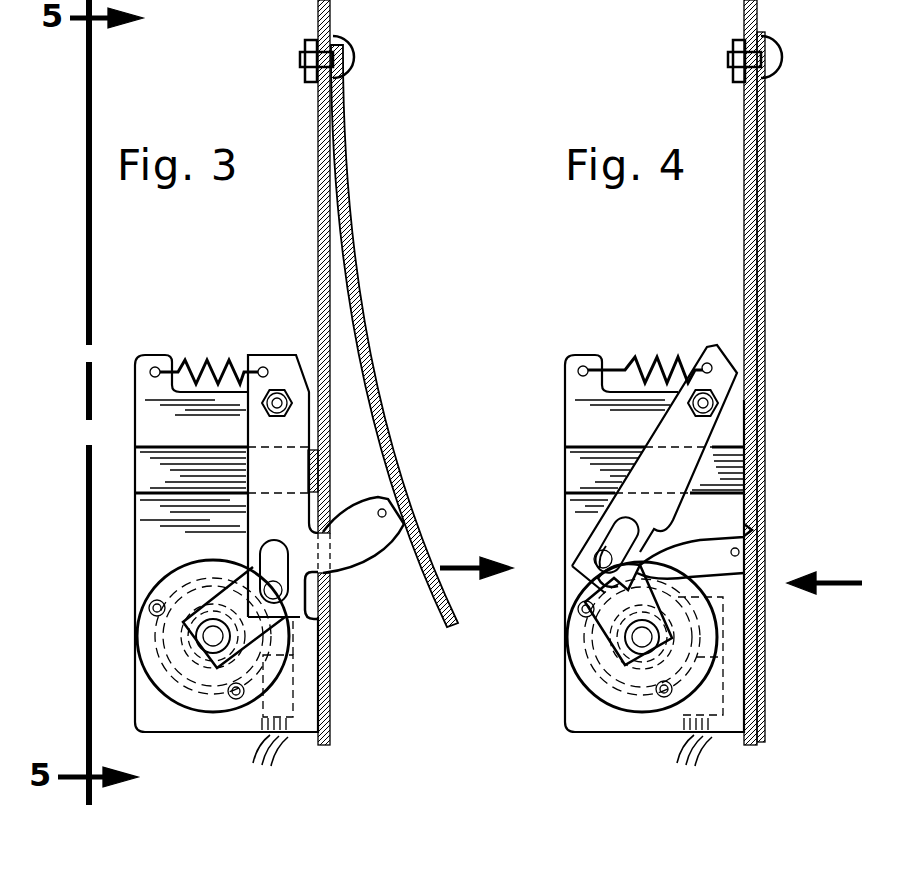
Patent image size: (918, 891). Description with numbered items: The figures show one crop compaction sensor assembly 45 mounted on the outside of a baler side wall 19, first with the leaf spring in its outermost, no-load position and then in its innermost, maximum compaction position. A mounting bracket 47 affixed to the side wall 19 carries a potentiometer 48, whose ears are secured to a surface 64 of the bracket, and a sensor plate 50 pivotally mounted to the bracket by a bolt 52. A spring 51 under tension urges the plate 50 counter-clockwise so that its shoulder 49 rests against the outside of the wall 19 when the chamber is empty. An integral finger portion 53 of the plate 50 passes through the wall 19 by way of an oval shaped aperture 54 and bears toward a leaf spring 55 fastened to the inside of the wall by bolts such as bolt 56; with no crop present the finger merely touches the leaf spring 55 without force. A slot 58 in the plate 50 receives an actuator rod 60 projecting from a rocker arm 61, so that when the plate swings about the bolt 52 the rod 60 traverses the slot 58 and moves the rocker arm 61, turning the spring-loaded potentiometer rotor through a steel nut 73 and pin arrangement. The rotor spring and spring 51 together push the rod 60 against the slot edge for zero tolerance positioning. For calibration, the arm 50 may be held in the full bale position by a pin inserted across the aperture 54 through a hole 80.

In FIG. 3, the side wall 19 is at (318, 128).
In FIG. 4, the side wall 19 is at (744, 128).
In FIG. 3, the sensor assembly 45 is at (160, 308).
In FIG. 4, the sensor assembly 45 is at (609, 275).
In FIG. 3, the mounting bracket 47 is at (135, 410).
In FIG. 4, the mounting bracket 47 is at (565, 412).
In FIG. 3, the potentiometer 48 is at (160, 695).
In FIG. 4, the potentiometer 48 is at (617, 700).
In FIG. 3, the shoulder 49 is at (330, 605).
In FIG. 4, the shoulder 49 is at (600, 585).
In FIG. 3, the sensor plate 50 is at (247, 420).
In FIG. 4, the sensor plate 50 is at (680, 385).
In FIG. 3, the spring 51 is at (215, 372).
In FIG. 4, the spring 51 is at (650, 372).
In FIG. 3, the bolt 52 is at (277, 388).
In FIG. 4, the bolt 52 is at (704, 388).
In FIG. 3, the finger portion 53 is at (350, 553).
In FIG. 4, the finger portion 53 is at (668, 568).
In FIG. 3, the oval shaped aperture 54 is at (332, 533).
In FIG. 4, the oval shaped aperture 54 is at (752, 532).
In FIG. 3, the leaf spring 55 is at (360, 282).
In FIG. 4, the leaf spring 55 is at (766, 205).
In FIG. 3, the bolt 56 is at (355, 58).
In FIG. 4, the bolt 56 is at (755, 59).
In FIG. 3, the slot 58 is at (313, 447).
In FIG. 4, the slot 58 is at (603, 548).
In FIG. 3, the actuator rod 60 is at (322, 650).
In FIG. 4, the actuator rod 60 is at (610, 556).
In FIG. 3, the rocker arm 61 is at (245, 668).
In FIG. 4, the rocker arm 61 is at (605, 625).
In FIG. 3, the surface of mounting bracket 64 is at (150, 548).
In FIG. 4, the surface of mounting bracket 64 is at (656, 456).
In FIG. 3, the steel nut 73 is at (158, 690).
In FIG. 4, the steel nut 73 is at (592, 695).
In FIG. 3, the hole 80 is at (355, 550).
In FIG. 4, the hole 80 is at (742, 552).